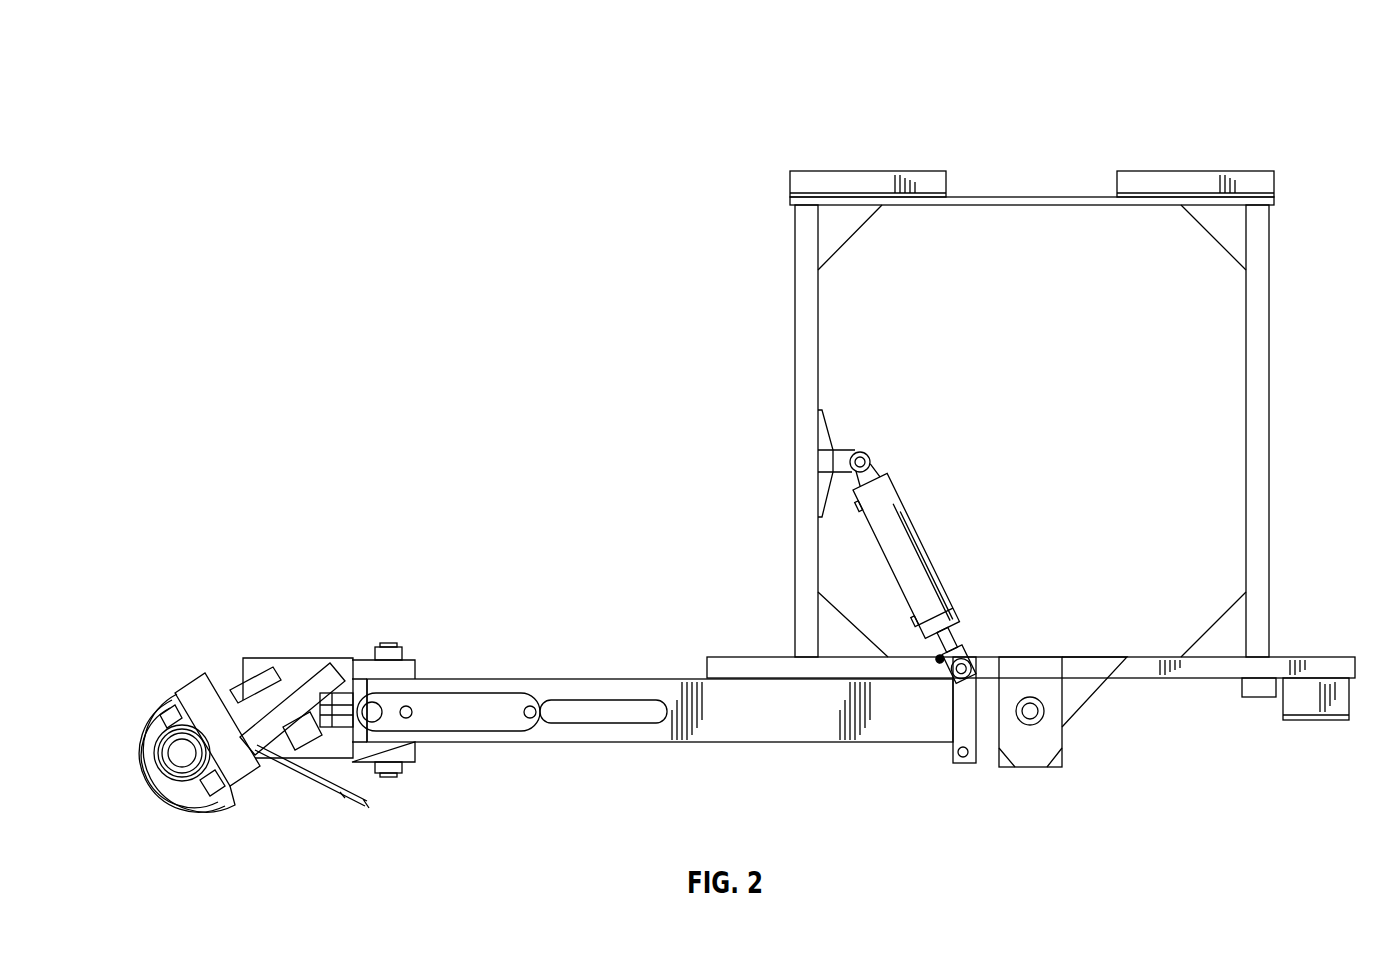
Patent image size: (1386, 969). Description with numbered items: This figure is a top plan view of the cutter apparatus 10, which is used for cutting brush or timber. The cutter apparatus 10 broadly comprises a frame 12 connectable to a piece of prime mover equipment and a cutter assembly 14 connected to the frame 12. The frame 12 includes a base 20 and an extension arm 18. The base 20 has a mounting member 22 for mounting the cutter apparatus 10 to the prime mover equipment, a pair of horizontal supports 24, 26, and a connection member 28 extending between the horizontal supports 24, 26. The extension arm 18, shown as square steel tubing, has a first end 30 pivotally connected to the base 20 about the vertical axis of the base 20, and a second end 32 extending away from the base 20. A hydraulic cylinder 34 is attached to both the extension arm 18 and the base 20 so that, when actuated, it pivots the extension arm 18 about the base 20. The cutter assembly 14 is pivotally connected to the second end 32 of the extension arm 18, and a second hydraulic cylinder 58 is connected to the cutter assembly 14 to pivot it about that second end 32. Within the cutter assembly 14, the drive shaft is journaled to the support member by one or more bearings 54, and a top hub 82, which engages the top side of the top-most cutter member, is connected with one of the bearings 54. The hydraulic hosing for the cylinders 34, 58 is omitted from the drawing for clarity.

The cutter apparatus 10 is at (1162, 97).
The frame 12 is at (795, 360).
The cutter assembly 14 is at (178, 692).
The extension arm 18 is at (700, 742).
The base 20 is at (795, 215).
The mounting member 22 is at (1025, 197).
The horizontal support 24 is at (795, 450).
The horizontal support 26 is at (1269, 320).
The connection member 28 is at (1153, 657).
The first end 30 is at (900, 742).
The second end 32 is at (438, 743).
The hydraulic cylinder 34 is at (912, 512).
The bearing 54 is at (401, 647).
The hydraulic cylinder 58 is at (500, 690).
The top hub 82 is at (315, 780).